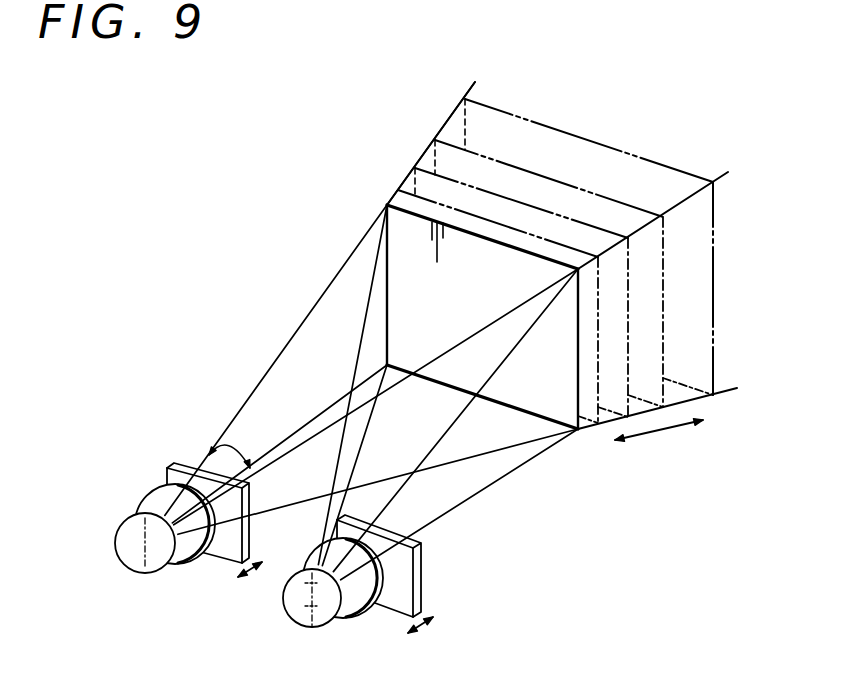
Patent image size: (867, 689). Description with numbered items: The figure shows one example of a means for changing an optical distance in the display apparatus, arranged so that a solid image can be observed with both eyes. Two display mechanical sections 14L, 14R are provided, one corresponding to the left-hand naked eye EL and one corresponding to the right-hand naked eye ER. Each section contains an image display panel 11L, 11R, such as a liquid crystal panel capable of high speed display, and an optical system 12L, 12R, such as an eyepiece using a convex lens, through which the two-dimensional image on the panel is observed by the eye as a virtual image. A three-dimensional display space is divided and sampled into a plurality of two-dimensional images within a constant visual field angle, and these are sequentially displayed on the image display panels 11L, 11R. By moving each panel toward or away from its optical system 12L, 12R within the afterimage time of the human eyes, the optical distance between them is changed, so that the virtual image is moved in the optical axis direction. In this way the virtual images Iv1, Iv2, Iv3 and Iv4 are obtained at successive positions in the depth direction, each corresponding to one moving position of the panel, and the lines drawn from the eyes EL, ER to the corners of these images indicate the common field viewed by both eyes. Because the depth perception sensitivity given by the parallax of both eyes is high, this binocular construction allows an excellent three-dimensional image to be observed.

The virtual image Iv1 is at (580, 362).
The virtual image Iv2 is at (600, 330).
The virtual image Iv3 is at (663, 287).
The virtual image Iv4 is at (716, 198).
The display mechanical section 14L is at (167, 464).
The display mechanical section 14R is at (438, 562).
The image display panel 11L is at (167, 466).
The image display panel 11R is at (418, 544).
The optical system 12L is at (152, 500).
The optical system 12R is at (381, 578).
The left-hand naked eye EL is at (117, 538).
The right-hand naked eye ER is at (333, 606).